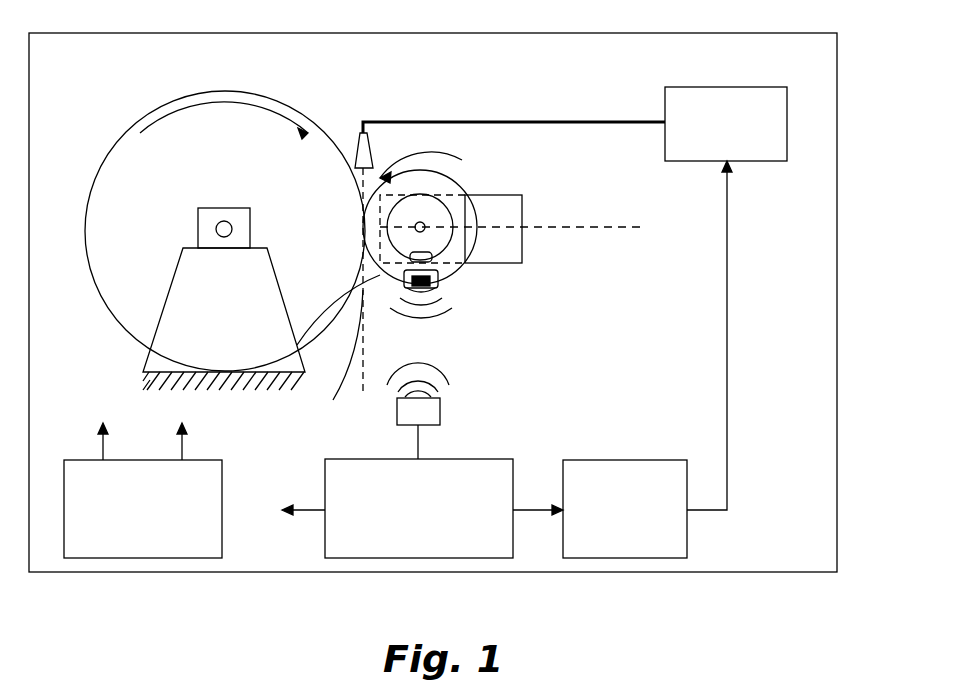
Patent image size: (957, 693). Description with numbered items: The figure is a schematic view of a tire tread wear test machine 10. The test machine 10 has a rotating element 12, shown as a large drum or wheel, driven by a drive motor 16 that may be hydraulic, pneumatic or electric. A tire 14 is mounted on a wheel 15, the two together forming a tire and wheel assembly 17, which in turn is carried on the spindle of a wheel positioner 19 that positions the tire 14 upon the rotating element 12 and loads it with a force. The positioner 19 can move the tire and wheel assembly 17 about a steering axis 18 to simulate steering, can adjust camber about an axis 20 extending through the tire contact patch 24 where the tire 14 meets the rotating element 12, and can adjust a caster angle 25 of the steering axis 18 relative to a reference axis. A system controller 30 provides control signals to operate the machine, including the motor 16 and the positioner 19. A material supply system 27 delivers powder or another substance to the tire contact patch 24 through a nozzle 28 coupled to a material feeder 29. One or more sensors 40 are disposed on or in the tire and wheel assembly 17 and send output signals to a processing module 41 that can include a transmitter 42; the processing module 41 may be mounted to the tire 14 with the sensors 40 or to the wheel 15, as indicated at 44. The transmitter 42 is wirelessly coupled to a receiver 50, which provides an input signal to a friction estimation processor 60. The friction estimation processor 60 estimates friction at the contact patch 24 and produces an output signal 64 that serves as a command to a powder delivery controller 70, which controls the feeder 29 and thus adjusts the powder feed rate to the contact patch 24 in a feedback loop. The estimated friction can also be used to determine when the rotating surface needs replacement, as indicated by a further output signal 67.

The tire tread wear test machine 10 is at (94, 111).
The rotating element 12 is at (120, 324).
The tire 14 is at (465, 188).
The wheel 15 is at (450, 246).
The drive motor 16 is at (198, 214).
The tire and wheel assembly 17 is at (382, 290).
The steering axis 18 is at (640, 232).
The wheel positioner 19 is at (522, 207).
The camber axis 20 is at (363, 392).
The tire contact patch 24 is at (350, 218).
The caster angle 25 is at (412, 216).
The material supply system 27 is at (766, 315).
The nozzle 28 is at (374, 152).
The material feeder 29 is at (745, 87).
The system controller 30 is at (224, 480).
The sensors 40 is at (438, 280).
The processing module 41 is at (363, 290).
The transmitter 42 is at (334, 398).
The wheel-mounted processing module location 44 is at (436, 257).
The receiver 50 is at (441, 412).
The friction estimation processor 60 is at (475, 459).
The output signal 64 is at (545, 505).
The output signal 67 is at (308, 507).
The powder delivery controller 70 is at (648, 460).